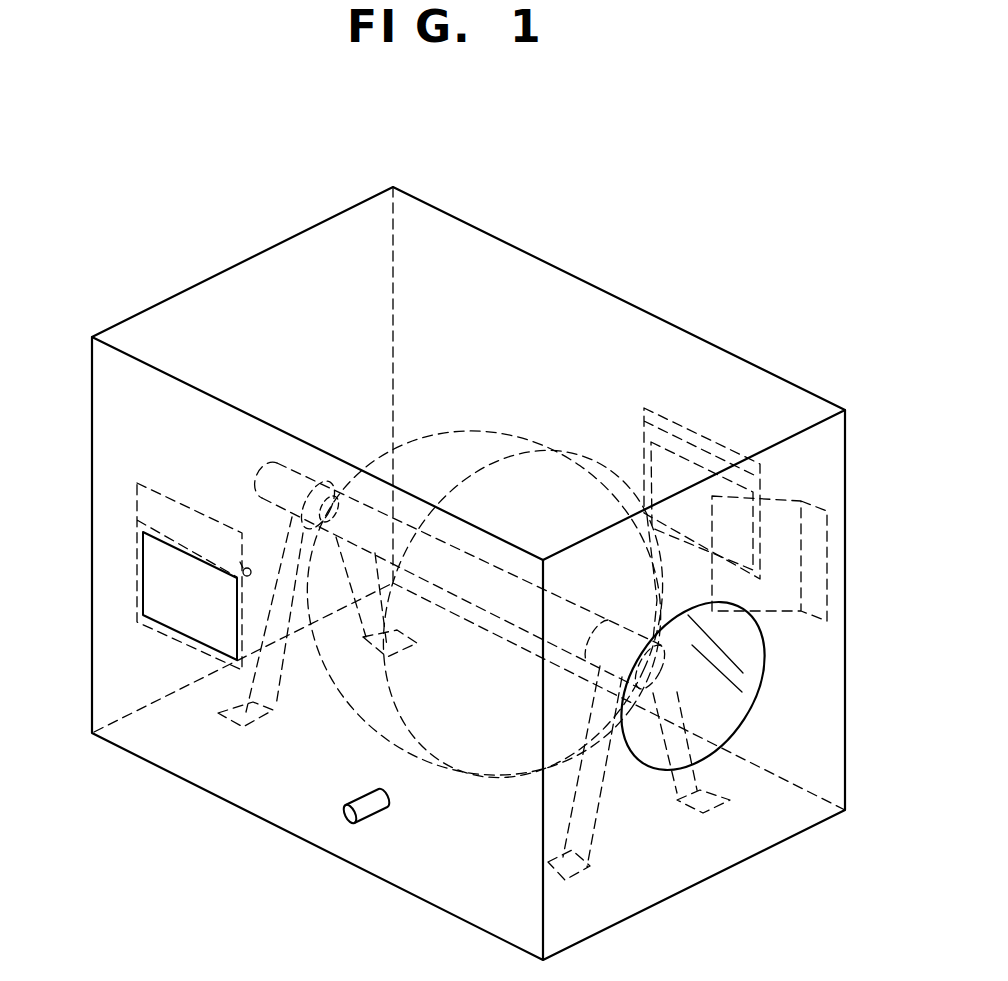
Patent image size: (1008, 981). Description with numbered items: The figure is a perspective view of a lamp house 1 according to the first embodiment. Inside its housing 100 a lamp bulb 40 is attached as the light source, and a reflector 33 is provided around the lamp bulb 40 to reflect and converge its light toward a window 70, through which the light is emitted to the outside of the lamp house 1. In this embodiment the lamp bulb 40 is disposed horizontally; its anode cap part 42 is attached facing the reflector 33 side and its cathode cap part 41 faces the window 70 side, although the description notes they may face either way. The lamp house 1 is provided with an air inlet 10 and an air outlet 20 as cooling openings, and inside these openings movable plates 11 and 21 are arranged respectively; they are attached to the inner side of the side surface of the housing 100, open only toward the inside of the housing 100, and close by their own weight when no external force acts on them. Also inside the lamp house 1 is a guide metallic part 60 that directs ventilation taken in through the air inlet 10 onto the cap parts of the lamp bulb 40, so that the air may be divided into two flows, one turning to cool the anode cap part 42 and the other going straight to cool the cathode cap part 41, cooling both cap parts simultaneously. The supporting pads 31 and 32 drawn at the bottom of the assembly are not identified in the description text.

The lamp house 1 is at (600, 245).
The housing 100 is at (312, 227).
The air inlet 10 is at (647, 483).
The movable plate 11 is at (683, 427).
The air outlet 20 is at (153, 594).
The movable plate 21 is at (138, 504).
The support leg 31 is at (597, 828).
The support leg 32 is at (233, 723).
The reflector 33 is at (447, 780).
The lamp bulb 40 is at (531, 588).
The cathode cap part 41 is at (683, 663).
The anode cap part 42 is at (284, 472).
The guide metallic part 60 is at (810, 503).
The window 70 is at (747, 730).